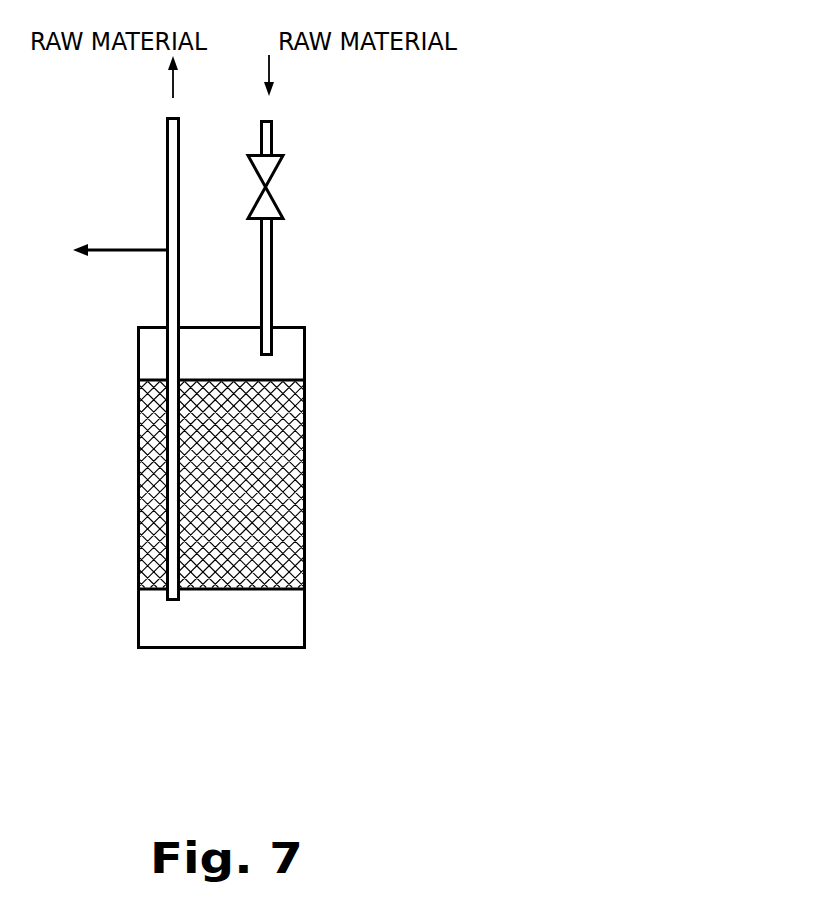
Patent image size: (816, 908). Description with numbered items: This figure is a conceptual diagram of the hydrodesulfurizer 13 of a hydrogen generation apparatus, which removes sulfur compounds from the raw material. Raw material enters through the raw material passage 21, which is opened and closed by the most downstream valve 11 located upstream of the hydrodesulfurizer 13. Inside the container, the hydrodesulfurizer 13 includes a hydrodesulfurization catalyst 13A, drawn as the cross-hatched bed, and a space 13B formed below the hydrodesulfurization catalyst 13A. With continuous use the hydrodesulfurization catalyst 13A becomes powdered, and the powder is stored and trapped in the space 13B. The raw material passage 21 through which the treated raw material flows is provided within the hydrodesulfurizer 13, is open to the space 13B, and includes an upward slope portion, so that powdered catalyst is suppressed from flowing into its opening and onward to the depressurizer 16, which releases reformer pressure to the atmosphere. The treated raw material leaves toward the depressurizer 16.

The most downstream valve 11 is at (270, 192).
The hydrodesulfurizer 13 is at (325, 491).
The hydrodesulfurization catalyst 13A is at (289, 430).
The space 13B is at (277, 614).
The depressurizer 16 is at (98, 250).
The raw material passage 21 is at (178, 290).